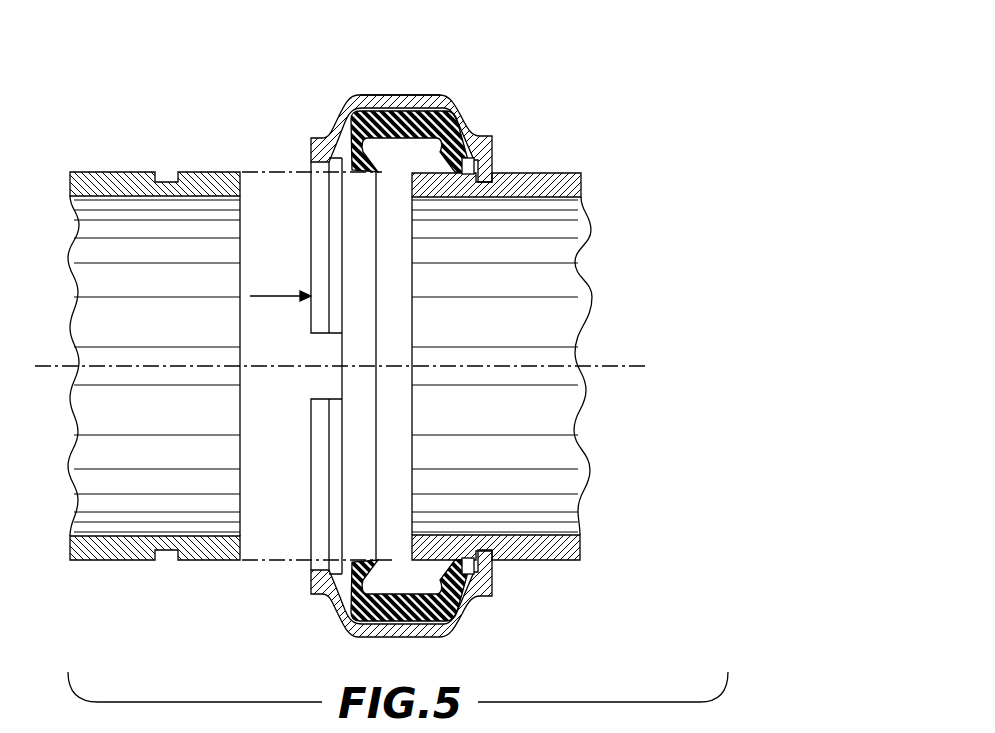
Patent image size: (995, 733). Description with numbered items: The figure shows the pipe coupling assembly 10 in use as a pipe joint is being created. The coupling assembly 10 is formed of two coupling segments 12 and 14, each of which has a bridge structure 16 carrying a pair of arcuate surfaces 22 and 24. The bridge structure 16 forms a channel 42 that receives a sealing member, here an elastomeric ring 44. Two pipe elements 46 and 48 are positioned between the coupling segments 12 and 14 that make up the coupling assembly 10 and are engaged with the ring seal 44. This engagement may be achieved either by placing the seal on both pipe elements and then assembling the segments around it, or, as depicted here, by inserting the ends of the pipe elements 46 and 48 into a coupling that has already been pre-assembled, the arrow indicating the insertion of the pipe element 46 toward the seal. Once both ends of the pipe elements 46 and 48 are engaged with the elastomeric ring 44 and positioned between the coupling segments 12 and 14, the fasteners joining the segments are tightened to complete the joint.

The pipe coupling assembly 10 is at (309, 116).
The coupling segment 12 is at (414, 183).
The coupling segment 14 is at (328, 607).
The bridge structure 16 is at (521, 311).
The arcuate surface 22 is at (316, 237).
The arcuate surface 24 is at (493, 158).
The channel 42 is at (393, 96).
The elastomeric ring 44 is at (452, 113).
The pipe element 46 is at (125, 552).
The pipe element 48 is at (538, 535).